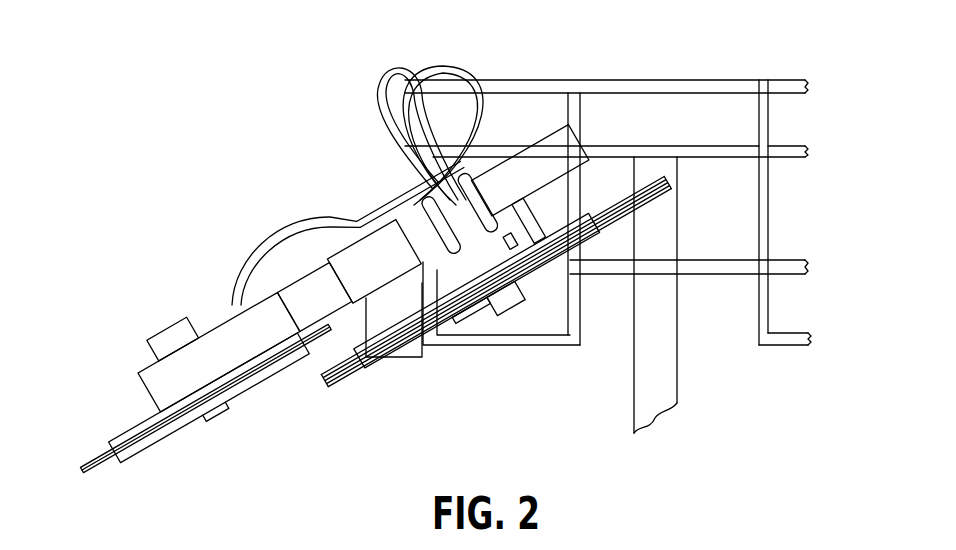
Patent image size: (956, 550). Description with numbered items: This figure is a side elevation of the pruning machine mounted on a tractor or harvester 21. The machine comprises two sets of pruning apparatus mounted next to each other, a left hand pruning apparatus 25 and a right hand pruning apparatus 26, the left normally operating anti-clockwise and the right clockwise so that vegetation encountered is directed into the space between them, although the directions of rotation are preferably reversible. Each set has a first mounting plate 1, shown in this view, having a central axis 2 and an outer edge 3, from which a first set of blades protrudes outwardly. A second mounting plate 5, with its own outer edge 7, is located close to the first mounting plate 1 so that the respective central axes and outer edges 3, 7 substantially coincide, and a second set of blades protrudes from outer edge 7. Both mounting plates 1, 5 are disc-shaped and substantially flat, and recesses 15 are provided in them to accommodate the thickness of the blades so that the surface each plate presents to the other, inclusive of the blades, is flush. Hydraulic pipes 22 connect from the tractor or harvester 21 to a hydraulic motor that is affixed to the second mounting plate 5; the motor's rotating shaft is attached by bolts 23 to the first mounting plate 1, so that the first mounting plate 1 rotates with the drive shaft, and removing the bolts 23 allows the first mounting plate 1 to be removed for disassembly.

The first mounting plate 1 is at (593, 233).
The central axis 2 is at (520, 295).
The outer edge 3 is at (622, 218).
The second mounting plate 5 is at (560, 232).
The outer edge 7 is at (620, 200).
The recesses 15 is at (502, 215).
The tractor or harvester 21 is at (764, 120).
The hydraulic pipes 22 is at (437, 76).
The bolts 23 is at (508, 287).
The left hand pruning apparatus 25 is at (252, 385).
The right hand pruning apparatus 26 is at (473, 307).